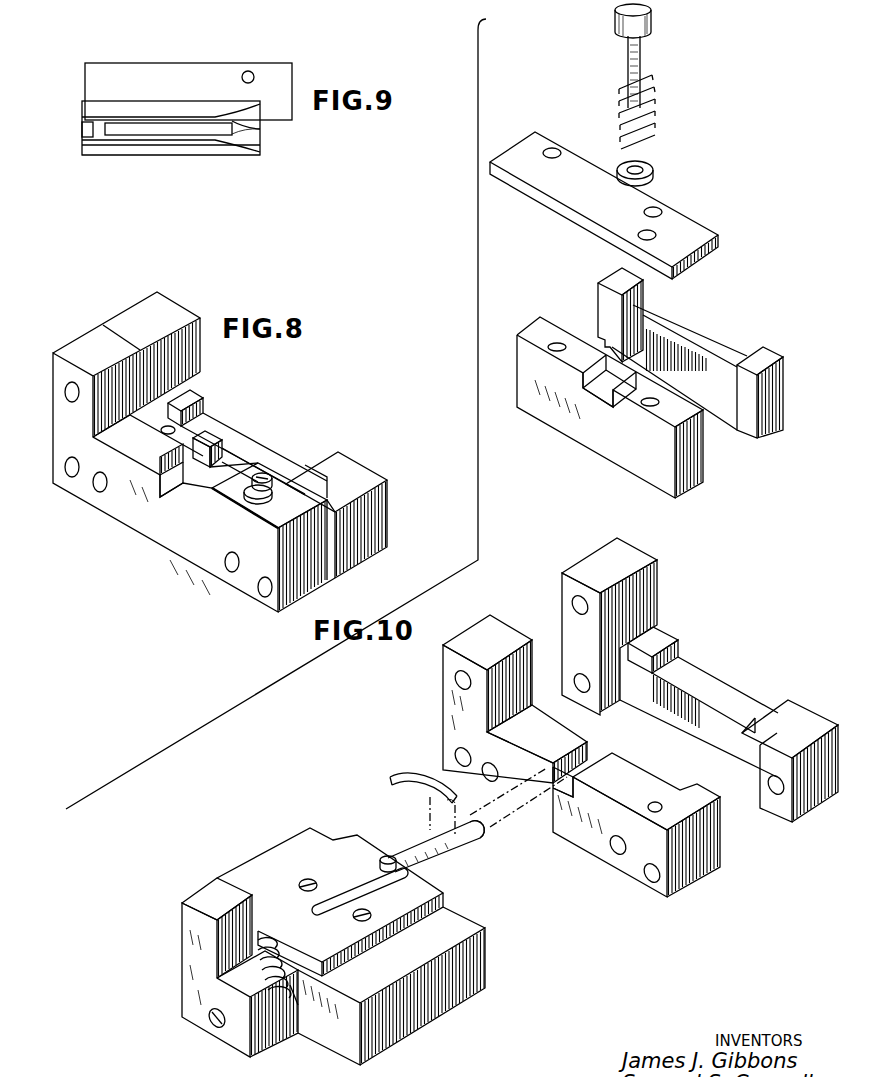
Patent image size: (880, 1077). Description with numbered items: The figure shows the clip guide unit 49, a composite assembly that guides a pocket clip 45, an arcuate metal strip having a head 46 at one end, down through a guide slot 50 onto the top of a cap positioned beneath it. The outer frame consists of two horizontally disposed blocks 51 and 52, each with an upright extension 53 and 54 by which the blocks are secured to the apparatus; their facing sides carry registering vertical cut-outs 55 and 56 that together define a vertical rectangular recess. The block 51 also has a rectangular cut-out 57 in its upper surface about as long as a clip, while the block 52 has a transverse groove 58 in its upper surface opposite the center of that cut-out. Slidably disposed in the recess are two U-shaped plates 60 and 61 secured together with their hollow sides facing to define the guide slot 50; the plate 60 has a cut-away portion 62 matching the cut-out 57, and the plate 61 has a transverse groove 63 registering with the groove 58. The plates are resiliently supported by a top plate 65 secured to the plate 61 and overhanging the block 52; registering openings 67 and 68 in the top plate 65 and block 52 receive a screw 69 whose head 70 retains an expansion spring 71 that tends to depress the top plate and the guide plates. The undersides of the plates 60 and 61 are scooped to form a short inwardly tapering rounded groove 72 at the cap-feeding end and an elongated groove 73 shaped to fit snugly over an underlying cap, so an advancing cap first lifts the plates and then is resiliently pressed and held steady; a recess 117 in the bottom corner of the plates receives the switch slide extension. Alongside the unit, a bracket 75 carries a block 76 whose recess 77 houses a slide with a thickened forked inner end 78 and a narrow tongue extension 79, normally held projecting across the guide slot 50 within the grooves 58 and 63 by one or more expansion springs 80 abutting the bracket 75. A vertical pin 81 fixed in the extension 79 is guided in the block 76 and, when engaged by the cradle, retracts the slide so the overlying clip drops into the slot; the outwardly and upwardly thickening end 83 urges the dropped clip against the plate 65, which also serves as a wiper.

In FIG. 10, the pocket clip 45 is at (420, 776).
In FIG. 10, the head 46 is at (394, 780).
In FIG. 8, the clip guide unit 49 is at (373, 455).
In FIG. 9, the guide slot 50 is at (160, 142).
In FIG. 8, the guide slot 50 is at (228, 453).
In FIG. 8, the block 51 is at (353, 565).
In FIG. 10, the block 51 is at (798, 703).
In FIG. 10, the block 52 is at (712, 873).
In FIG. 8, the upright extension 53 is at (140, 303).
In FIG. 10, the upright extension 53 is at (598, 556).
In FIG. 8, the upright extension 54 is at (86, 336).
In FIG. 10, the upright extension 54 is at (498, 625).
In FIG. 8, the cut-out 55 is at (310, 465).
In FIG. 10, the cut-out 55 is at (762, 738).
In FIG. 10, the cut-out 56 is at (676, 780).
In FIG. 8, the rectangular cut-out 57 is at (225, 412).
In FIG. 10, the rectangular cut-out 57 is at (683, 655).
In FIG. 8, the transverse groove 58 is at (163, 495).
In FIG. 10, the transverse groove 58 is at (590, 760).
In FIG. 9, the U-shaped plate 60 is at (225, 148).
In FIG. 10, the U-shaped plate 60 is at (748, 430).
In FIG. 9, the U-shaped plate 61 is at (224, 110).
In FIG. 10, the U-shaped plate 61 is at (612, 452).
In FIG. 8, the cut-away portion 62 is at (220, 442).
In FIG. 10, the cut-away portion 62 is at (680, 330).
In FIG. 8, the transverse groove 63 is at (173, 497).
In FIG. 10, the transverse groove 63 is at (598, 395).
In FIG. 9, the top plate 65 is at (214, 67).
In FIG. 8, the top plate 65 is at (260, 530).
In FIG. 10, the top plate 65 is at (695, 228).
In FIG. 9, the opening 67 is at (248, 70).
In FIG. 10, the opening 67 is at (638, 237).
In FIG. 10, the opening 68 is at (655, 802).
In FIG. 8, the screw 69 is at (262, 497).
In FIG. 10, the screw 69 is at (643, 58).
In FIG. 10, the head 70 is at (648, 16).
In FIG. 8, the expansion spring 71 is at (270, 470).
In FIG. 10, the expansion spring 71 is at (650, 75).
In FIG. 9, the inwardly tapering rounded groove 72 is at (258, 134).
In FIG. 9, the elongated groove 73 is at (132, 146).
In FIG. 10, the bracket 75 is at (262, 1050).
In FIG. 10, the block 76 is at (398, 1040).
In FIG. 10, the recess 77 is at (298, 1010).
In FIG. 10, the forked inner end 78 is at (370, 882).
In FIG. 10, the tongue extension 79 is at (462, 858).
In FIG. 10, the expansion spring 80 is at (268, 945).
In FIG. 10, the pin 81 is at (390, 856).
In FIG. 10, the thickened end 83 is at (478, 835).
In FIG. 9, the recess 117 is at (84, 128).